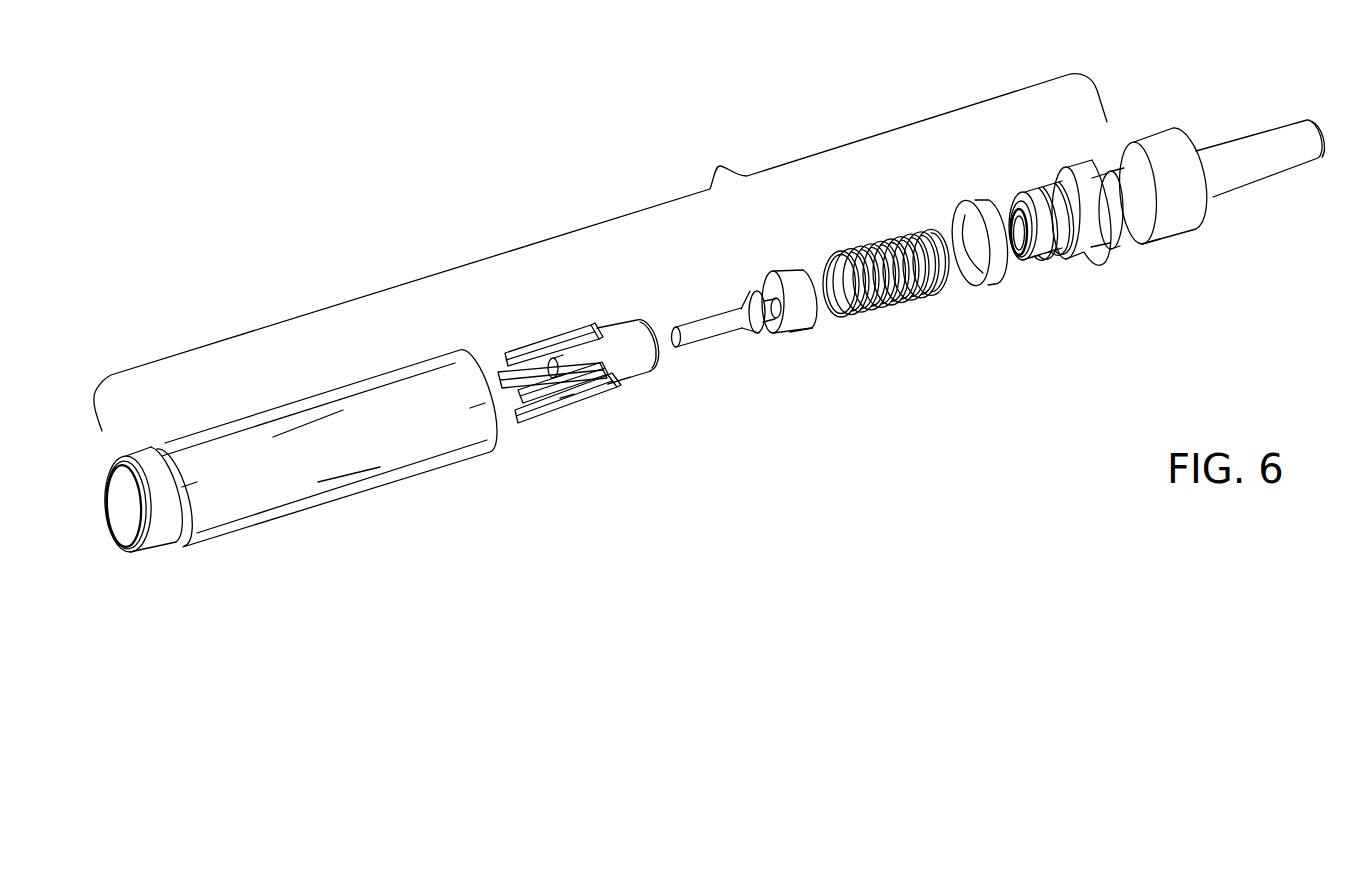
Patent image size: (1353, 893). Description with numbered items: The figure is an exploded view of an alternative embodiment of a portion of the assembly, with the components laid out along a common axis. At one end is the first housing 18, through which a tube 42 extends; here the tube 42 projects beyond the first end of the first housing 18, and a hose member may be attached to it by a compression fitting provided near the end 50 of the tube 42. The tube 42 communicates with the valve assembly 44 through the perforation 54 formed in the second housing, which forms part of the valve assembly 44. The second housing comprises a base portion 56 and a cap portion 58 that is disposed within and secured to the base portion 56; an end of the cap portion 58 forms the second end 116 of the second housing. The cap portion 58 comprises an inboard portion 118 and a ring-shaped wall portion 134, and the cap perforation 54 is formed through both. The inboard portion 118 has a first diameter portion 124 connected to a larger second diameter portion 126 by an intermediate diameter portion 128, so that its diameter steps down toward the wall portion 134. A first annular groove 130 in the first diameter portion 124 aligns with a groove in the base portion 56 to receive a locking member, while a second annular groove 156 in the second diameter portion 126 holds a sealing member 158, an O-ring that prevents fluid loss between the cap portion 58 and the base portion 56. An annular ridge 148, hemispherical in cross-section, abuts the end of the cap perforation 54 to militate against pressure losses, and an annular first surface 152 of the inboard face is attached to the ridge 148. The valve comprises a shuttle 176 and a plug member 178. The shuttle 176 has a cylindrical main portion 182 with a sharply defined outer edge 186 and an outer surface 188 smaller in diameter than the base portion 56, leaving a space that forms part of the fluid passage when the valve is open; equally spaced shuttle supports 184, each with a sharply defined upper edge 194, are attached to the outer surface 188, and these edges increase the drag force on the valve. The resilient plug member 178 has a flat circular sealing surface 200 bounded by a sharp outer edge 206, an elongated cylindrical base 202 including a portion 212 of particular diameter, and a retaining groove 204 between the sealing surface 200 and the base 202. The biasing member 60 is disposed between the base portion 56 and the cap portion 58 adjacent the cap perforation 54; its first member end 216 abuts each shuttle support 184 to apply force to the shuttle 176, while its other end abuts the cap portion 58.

The first housing 18 is at (1169, 235).
The tube 42 is at (1263, 183).
The valve assembly 44 is at (600, 252).
The end of the tube 50 is at (1318, 140).
The cap perforation 54 is at (1017, 225).
The base portion 56 is at (334, 500).
The cap portion 58 is at (1014, 223).
The biasing member 60 is at (886, 278).
The second end of the second housing 116 is at (1143, 250).
The inboard portion 118 is at (1030, 197).
The first diameter portion 124 is at (1053, 257).
The second diameter portion 126 is at (1133, 247).
The intermediate diameter portion 128 is at (1077, 257).
The first annular groove 130 is at (1063, 257).
The wall portion 134 is at (1033, 257).
The ridge 148 is at (1022, 257).
The first surface 152 is at (1020, 200).
The second annular groove 156 is at (1115, 243).
The sealing member 158 is at (973, 200).
The shuttle 176 is at (617, 397).
The plug member 178 is at (817, 312).
The main portion 182 is at (622, 383).
The shuttle supports 184 is at (515, 350).
The outer edge 186 is at (655, 352).
The outer surface 188 is at (657, 358).
The upper edge 194 is at (598, 327).
The sealing surface 200 is at (803, 330).
The base 202 is at (703, 343).
The retaining groove 204 is at (787, 330).
The outer edge 206 is at (816, 315).
The portion of the base 212 is at (760, 333).
The first member end 216 is at (847, 317).